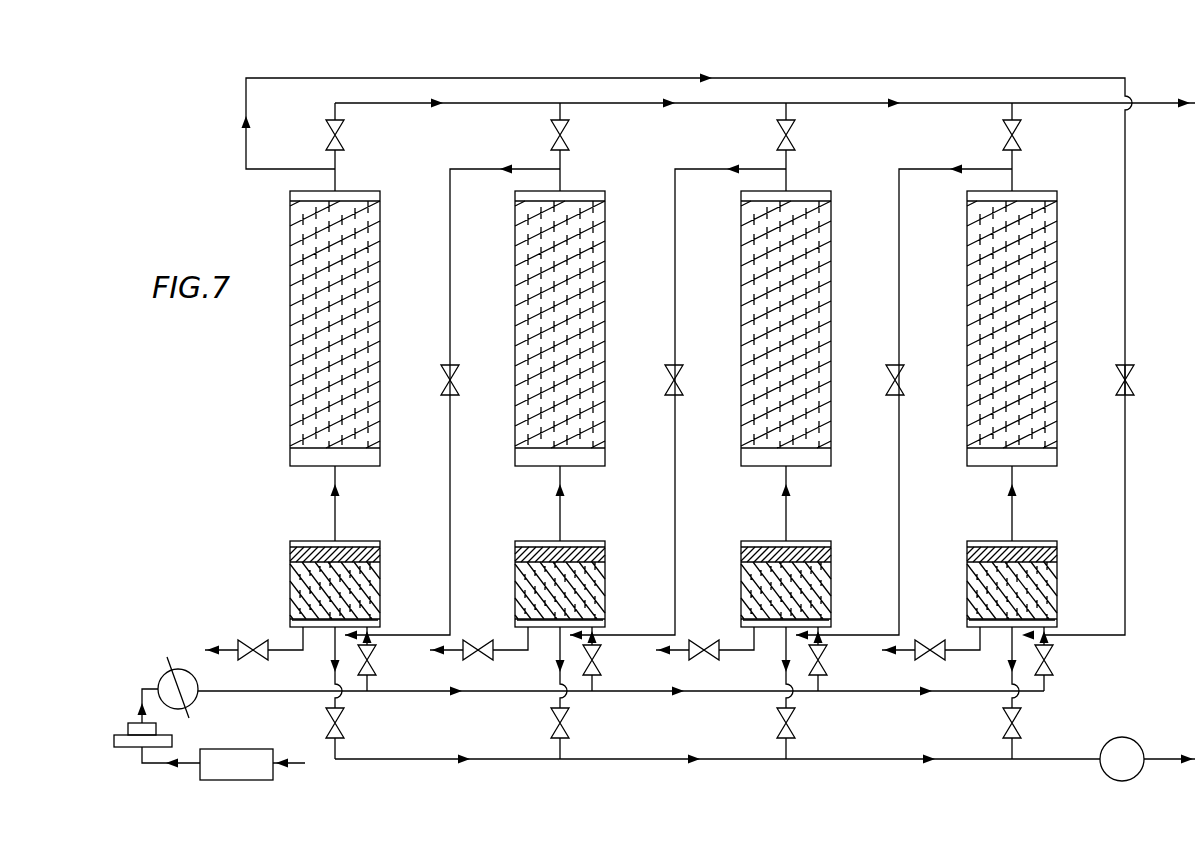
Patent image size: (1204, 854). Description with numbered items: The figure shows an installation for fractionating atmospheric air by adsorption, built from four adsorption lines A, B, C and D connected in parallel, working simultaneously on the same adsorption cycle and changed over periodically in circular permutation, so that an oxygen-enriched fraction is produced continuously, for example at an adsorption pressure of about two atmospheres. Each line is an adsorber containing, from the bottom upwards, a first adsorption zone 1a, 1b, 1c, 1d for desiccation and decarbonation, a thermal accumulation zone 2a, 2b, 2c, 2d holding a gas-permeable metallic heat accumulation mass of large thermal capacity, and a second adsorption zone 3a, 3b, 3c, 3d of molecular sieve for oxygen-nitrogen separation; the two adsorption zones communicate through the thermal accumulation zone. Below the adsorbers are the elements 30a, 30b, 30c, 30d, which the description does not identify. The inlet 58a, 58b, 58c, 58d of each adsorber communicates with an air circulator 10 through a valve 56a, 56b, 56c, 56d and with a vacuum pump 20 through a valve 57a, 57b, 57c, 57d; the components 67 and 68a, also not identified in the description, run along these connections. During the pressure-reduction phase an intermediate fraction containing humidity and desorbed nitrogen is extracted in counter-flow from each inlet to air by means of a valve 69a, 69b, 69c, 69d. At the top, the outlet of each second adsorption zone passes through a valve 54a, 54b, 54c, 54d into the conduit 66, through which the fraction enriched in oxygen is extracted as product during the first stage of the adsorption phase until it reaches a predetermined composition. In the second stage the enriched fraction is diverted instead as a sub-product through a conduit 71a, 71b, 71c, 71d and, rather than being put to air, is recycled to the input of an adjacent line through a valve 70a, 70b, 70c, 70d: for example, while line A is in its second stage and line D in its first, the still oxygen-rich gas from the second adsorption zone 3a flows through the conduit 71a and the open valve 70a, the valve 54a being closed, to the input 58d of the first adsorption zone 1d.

The first adsorption zone 1a is at (296, 581).
The first adsorption zone 1b is at (612, 606).
The first adsorption zone 1c is at (836, 606).
The first adsorption zone 1d is at (1062, 603).
The thermal accumulation zone 2a is at (292, 550).
The thermal accumulation zone 2b is at (612, 553).
The thermal accumulation zone 2c is at (840, 554).
The thermal accumulation zone 2d is at (1065, 552).
The second adsorption zone 3a is at (312, 411).
The second adsorption zone 3b is at (590, 398).
The second adsorption zone 3c is at (820, 426).
The second adsorption zone 3d is at (1054, 416).
The air circulator 10 is at (209, 718).
The vacuum pump 20 is at (1141, 753).
The pretreatment vessel a 30a is at (305, 584).
The pretreatment vessel b 30b is at (560, 584).
The pretreatment vessel c 30c is at (785, 584).
The pretreatment vessel d 30d is at (1007, 584).
The valve 54a is at (344, 137).
The valve 54b is at (569, 137).
The valve 54c is at (795, 137).
The valve 54d is at (1021, 137).
The valve 56a is at (404, 656).
The valve 56b is at (629, 656).
The valve 56c is at (855, 656).
The valve 56d is at (1053, 656).
The valve 57a is at (345, 725).
The valve 57b is at (570, 725).
The valve 57c is at (796, 725).
The valve 57d is at (1022, 725).
The inlet 58a is at (304, 622).
The inlet 58b is at (530, 622).
The inlet 58c is at (757, 622).
The inlet 58d is at (980, 622).
The conduit 66 is at (512, 103).
The bypass line 67 is at (513, 759).
The feed line 68a is at (271, 692).
The valve 69a is at (252, 640).
The valve 69b is at (504, 640).
The valve 69c is at (733, 640).
The valve 69d is at (955, 640).
The valve 70a is at (1116, 378).
The valve 70b is at (441, 375).
The valve 70c is at (665, 375).
The valve 70d is at (886, 375).
The conduit 71a is at (318, 78).
The conduit 71b is at (450, 229).
The conduit 71c is at (675, 229).
The conduit 71d is at (899, 229).